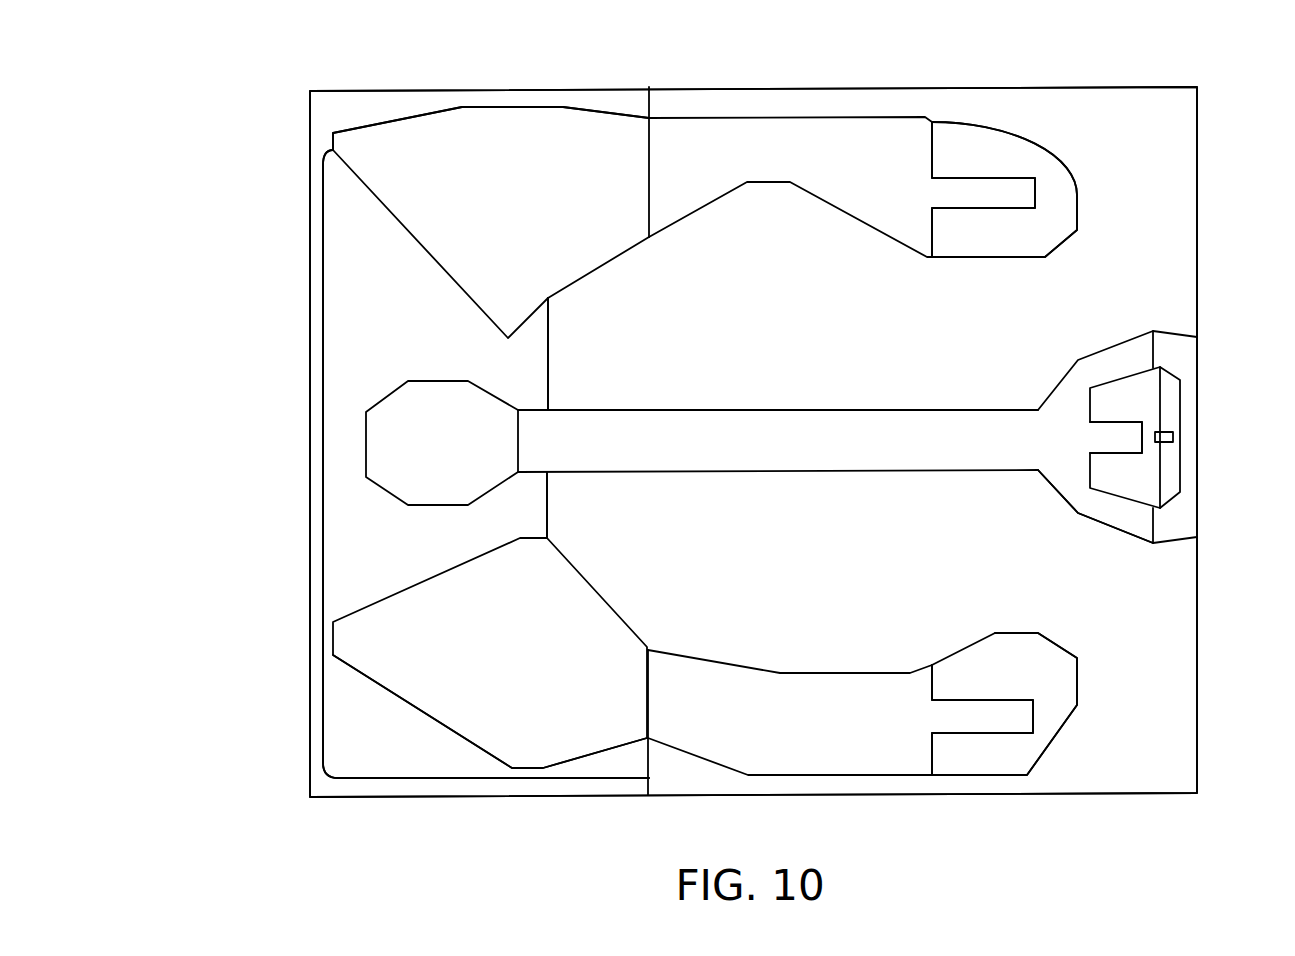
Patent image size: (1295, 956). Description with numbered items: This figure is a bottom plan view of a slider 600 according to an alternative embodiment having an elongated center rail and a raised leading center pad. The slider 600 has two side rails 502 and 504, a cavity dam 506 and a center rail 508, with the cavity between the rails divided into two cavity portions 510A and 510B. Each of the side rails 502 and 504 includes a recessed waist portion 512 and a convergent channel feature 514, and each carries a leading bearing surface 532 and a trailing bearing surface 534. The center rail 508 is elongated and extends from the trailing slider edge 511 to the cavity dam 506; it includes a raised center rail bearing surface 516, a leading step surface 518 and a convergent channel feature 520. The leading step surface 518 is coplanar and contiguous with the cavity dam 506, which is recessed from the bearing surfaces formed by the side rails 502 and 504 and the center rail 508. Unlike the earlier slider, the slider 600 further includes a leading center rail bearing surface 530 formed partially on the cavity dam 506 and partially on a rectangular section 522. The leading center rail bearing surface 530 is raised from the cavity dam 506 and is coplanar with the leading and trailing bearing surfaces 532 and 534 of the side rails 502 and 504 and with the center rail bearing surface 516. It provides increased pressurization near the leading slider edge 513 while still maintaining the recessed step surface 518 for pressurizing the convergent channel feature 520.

The slider 600 is at (282, 147).
The side rail 502 is at (568, 153).
The side rail 504 is at (526, 717).
The cavity dam 506 is at (372, 560).
The center rail 508 is at (1122, 340).
The divided cavity portion 510A is at (707, 313).
The divided cavity portion 510B is at (770, 586).
The trailing slider edge 511 is at (1201, 633).
The recessed waist portion 512 is at (801, 138).
The leading slider edge 513 is at (310, 683).
The convergent channel feature 514 is at (953, 192).
The center rail bearing surface 516 is at (1148, 402).
The leading step surface 518 is at (1062, 480).
The convergent channel feature 520 is at (1088, 437).
The rectangular section 522 is at (787, 407).
The leading center rail bearing surface 530 is at (440, 410).
The leading bearing surface 532 is at (473, 155).
The trailing bearing surface 534 is at (998, 145).